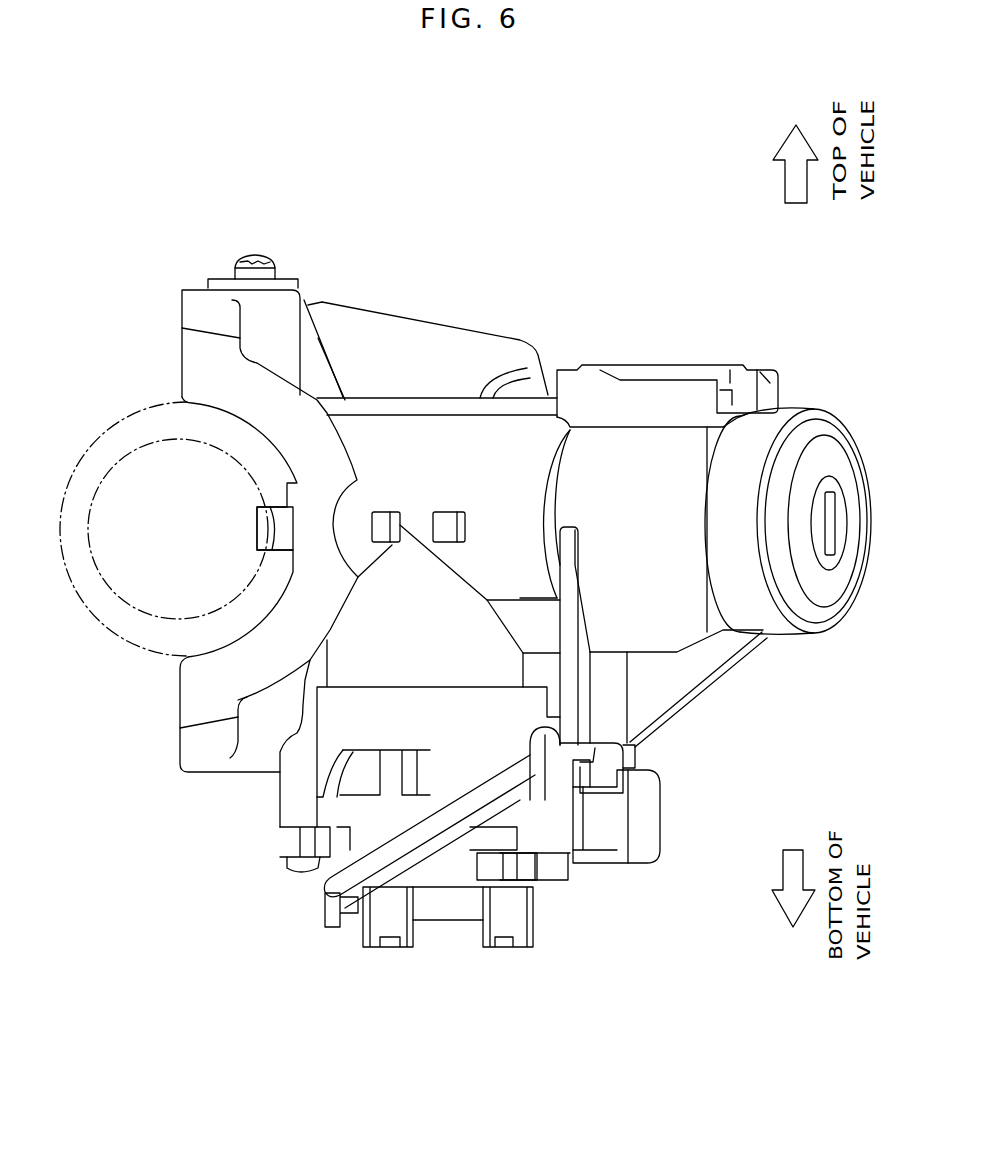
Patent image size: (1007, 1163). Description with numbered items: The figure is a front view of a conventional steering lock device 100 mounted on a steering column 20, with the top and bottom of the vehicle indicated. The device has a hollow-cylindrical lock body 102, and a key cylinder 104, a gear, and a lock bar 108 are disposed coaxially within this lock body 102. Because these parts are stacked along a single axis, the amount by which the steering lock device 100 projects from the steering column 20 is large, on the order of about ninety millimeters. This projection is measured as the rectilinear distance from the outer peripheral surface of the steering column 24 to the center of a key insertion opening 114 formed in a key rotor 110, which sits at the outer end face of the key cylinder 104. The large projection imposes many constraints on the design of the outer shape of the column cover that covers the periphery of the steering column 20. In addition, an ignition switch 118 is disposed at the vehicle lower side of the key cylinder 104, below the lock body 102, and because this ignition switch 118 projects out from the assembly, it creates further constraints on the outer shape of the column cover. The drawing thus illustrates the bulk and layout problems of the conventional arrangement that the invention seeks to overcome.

The steering lock device 100 is at (638, 175).
The steering column 20 is at (73, 600).
The steering column 24 is at (113, 463).
The lock bar 108 is at (262, 530).
The lock body 102 is at (673, 630).
The key cylinder 104 is at (852, 440).
The key rotor 110 is at (848, 548).
The key insertion opening 114 is at (830, 508).
The ignition switch 118 is at (442, 907).